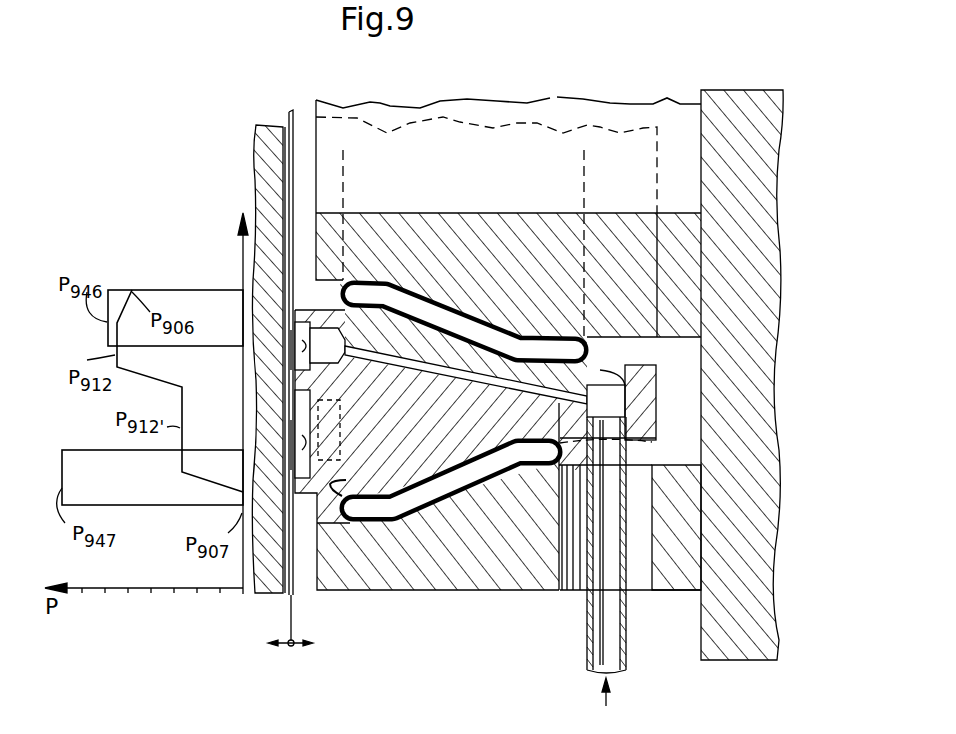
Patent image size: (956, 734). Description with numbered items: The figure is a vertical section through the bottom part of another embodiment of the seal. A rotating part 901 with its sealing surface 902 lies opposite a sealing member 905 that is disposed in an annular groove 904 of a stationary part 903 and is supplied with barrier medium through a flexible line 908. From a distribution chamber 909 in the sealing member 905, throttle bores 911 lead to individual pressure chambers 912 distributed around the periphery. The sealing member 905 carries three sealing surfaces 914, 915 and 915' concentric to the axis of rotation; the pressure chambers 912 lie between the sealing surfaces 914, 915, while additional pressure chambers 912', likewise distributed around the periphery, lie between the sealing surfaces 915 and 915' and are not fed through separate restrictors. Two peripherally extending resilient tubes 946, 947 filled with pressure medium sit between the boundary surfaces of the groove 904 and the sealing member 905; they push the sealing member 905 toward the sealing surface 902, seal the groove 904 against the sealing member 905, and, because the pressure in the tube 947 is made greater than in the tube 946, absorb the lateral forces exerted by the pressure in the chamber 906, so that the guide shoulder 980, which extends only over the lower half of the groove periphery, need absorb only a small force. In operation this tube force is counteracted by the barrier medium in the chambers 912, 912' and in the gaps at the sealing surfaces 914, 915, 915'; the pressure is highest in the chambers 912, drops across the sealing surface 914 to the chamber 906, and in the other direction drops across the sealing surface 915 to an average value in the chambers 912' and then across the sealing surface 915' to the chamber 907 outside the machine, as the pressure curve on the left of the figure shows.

The rotating part 901 is at (266, 128).
The sealing surface 902 is at (293, 376).
The stationary part 903 is at (476, 203).
The annular groove 904 is at (670, 340).
The sealing member 905 is at (668, 410).
The chamber 906 is at (307, 214).
The chamber 907 is at (303, 560).
The flexible line 908 is at (588, 626).
The distribution chamber 909 is at (602, 376).
The throttle bores 911 is at (428, 358).
The pressure chambers 912 is at (336, 355).
The additional pressure chambers 912' is at (346, 434).
The sealing surface 914 is at (293, 313).
The sealing surface 915 is at (273, 356).
The sealing surface 915' is at (274, 454).
The resilient tube 946 is at (480, 323).
The resilient tube 947 is at (457, 487).
The guide shoulder 980 is at (327, 493).